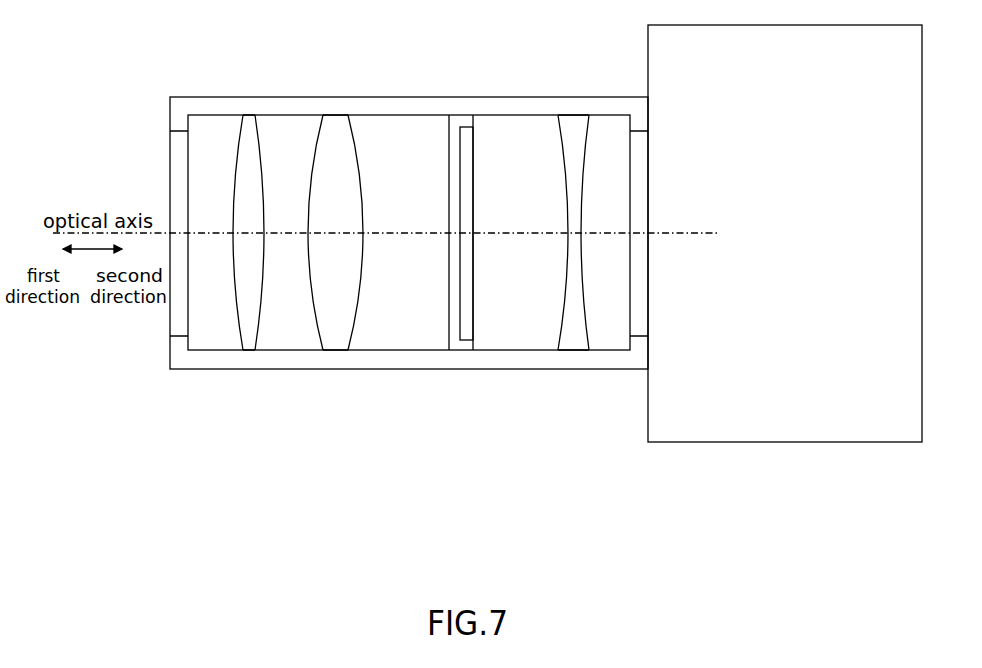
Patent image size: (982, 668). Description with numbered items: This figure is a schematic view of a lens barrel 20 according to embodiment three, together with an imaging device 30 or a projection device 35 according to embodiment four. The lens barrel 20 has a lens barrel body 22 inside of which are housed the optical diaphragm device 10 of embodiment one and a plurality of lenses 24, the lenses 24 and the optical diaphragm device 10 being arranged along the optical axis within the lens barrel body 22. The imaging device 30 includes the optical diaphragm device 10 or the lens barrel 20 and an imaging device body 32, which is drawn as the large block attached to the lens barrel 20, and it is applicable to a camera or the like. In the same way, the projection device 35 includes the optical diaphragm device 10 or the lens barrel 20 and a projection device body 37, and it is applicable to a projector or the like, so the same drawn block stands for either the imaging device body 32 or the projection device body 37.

The optical diaphragm device 10 is at (481, 337).
The lens barrel 20 is at (405, 301).
The lens barrel body 22 is at (194, 360).
The lenses 24 is at (248, 340).
The imaging device 30 is at (542, 285).
The projection device 35 is at (542, 285).
The imaging device body 32 is at (785, 265).
The projection device body 37 is at (752, 430).